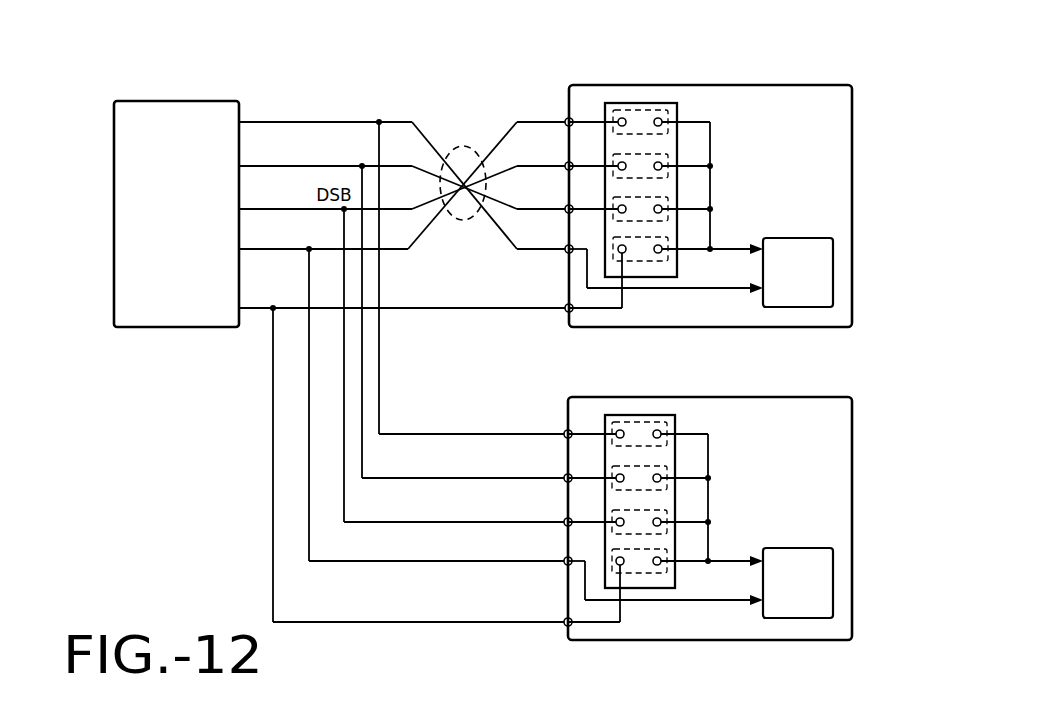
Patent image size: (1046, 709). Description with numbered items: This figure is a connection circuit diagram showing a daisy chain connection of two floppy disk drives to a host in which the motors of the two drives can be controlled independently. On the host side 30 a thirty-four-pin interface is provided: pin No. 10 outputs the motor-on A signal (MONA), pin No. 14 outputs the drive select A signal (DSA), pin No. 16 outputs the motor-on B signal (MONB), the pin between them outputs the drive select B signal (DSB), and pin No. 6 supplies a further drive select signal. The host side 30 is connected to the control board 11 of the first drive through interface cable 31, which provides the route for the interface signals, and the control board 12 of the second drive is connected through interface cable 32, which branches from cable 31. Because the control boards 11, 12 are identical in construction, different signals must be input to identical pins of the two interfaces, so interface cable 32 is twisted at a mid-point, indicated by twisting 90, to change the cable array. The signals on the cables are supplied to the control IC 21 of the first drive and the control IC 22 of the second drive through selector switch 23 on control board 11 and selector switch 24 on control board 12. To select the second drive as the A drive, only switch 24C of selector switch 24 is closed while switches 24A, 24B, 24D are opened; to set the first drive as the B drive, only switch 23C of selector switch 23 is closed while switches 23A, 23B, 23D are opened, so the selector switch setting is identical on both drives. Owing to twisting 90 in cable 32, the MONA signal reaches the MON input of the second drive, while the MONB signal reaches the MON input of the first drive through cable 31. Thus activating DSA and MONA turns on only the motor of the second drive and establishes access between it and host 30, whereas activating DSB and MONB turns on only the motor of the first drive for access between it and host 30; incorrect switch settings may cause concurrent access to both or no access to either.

The host side 30 is at (181, 120).
The pin No. 10 is at (389, 266).
The pin No. 14 is at (389, 310).
The pin No. 16 is at (389, 341).
The pin No. 6 is at (395, 459).
The twisting 90 is at (459, 146).
The interface cable 32 is at (541, 315).
The interface cable 31 is at (532, 627).
The control board of FDD 2 12 is at (799, 96).
The control board of FDD 1 11 is at (798, 408).
The selector switch 24 is at (673, 104).
The switch 24A is at (637, 112).
The switch 24B is at (670, 150).
The switch 24C is at (670, 195).
The switch 24D is at (642, 283).
The selector switch 23 is at (671, 416).
The switch 23A is at (637, 430).
The switch 23B is at (668, 461).
The switch 23C is at (668, 506).
The switch 23D is at (642, 594).
The control IC 22 is at (818, 277).
The control IC 21 is at (818, 589).